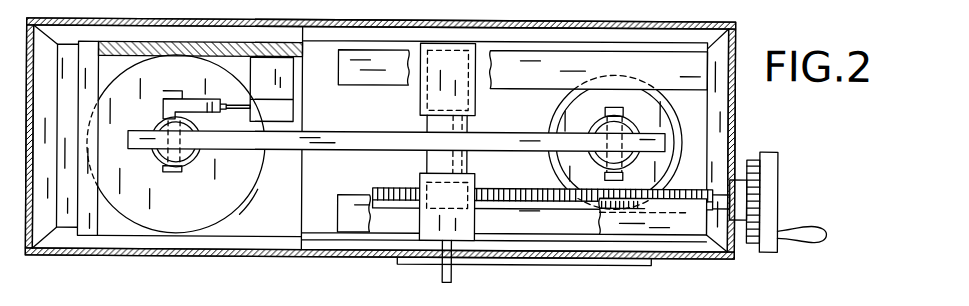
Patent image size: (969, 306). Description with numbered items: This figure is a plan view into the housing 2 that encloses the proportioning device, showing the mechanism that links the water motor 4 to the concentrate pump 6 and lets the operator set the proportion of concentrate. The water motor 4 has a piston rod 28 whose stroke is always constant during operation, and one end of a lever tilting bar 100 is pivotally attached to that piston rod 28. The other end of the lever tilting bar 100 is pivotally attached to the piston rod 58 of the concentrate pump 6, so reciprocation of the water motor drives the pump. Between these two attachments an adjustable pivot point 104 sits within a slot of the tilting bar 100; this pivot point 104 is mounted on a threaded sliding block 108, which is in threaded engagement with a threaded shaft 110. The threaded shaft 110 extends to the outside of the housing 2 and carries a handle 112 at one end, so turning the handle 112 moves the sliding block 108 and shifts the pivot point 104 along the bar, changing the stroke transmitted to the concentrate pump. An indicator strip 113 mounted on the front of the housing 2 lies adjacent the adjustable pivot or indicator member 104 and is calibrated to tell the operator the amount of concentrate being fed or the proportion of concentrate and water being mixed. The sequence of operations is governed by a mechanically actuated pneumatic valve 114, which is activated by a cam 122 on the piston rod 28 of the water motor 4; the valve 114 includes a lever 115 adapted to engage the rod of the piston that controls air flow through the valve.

The housing 2 is at (740, 126).
The water motor 4 is at (259, 193).
The concentrate pump 6 is at (545, 115).
The piston rod 28 is at (163, 154).
The piston rod 58 is at (602, 127).
The lever tilting bar 100 is at (363, 144).
The adjustable pivot point 104 is at (442, 275).
The threaded sliding block 108 is at (418, 178).
The threaded shaft 110 is at (500, 193).
The handle 112 is at (767, 193).
The indicator strip 113 is at (637, 265).
The pneumatic valve 114 is at (262, 80).
The lever 115 is at (272, 189).
The cam 122 is at (203, 114).